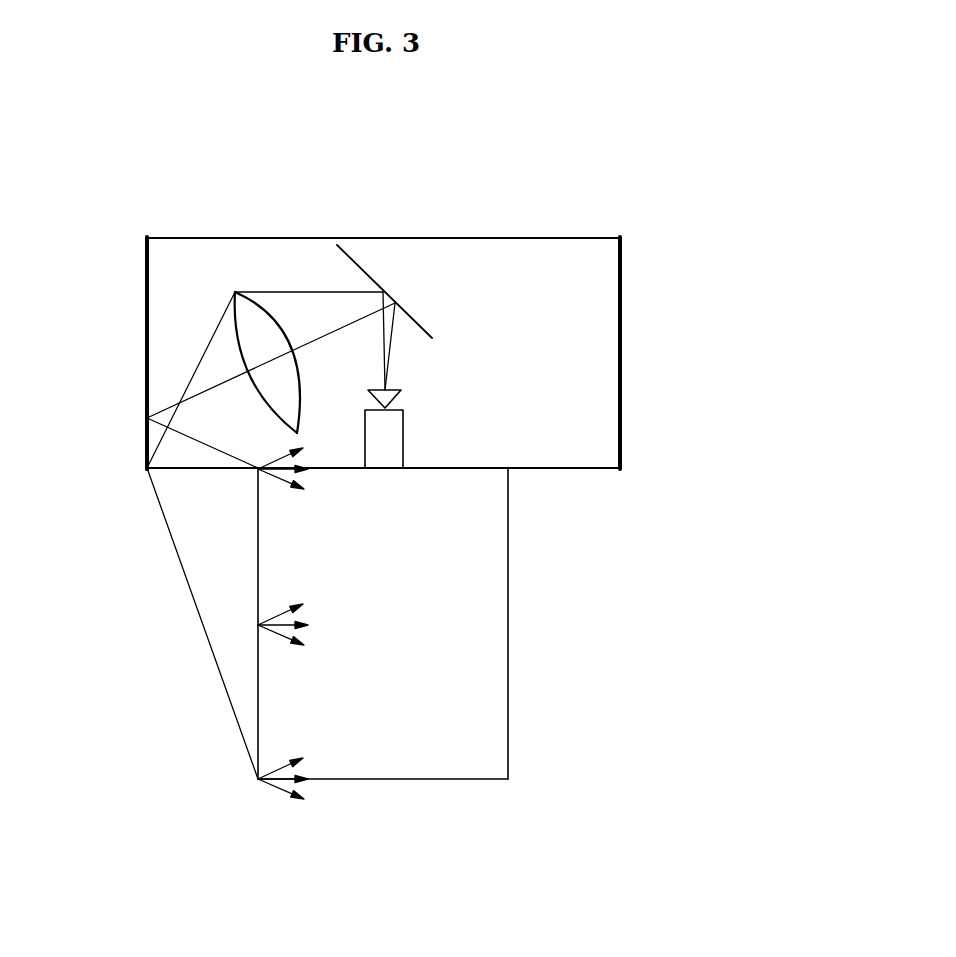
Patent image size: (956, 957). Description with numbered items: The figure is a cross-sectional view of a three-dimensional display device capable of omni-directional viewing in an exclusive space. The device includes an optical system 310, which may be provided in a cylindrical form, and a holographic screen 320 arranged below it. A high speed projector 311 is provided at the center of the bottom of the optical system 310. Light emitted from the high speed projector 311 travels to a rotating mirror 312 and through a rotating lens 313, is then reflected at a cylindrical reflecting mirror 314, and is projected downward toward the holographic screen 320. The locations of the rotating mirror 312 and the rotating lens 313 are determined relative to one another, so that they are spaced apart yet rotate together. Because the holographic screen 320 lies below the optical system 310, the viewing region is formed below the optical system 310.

The optical system 310 is at (580, 238).
The high speed projector 311 is at (403, 438).
The rotating mirror 312 is at (385, 292).
The rotating lens 313 is at (235, 333).
The cylindrical reflecting mirror 314 is at (146, 440).
The holographic screen 320 is at (508, 640).